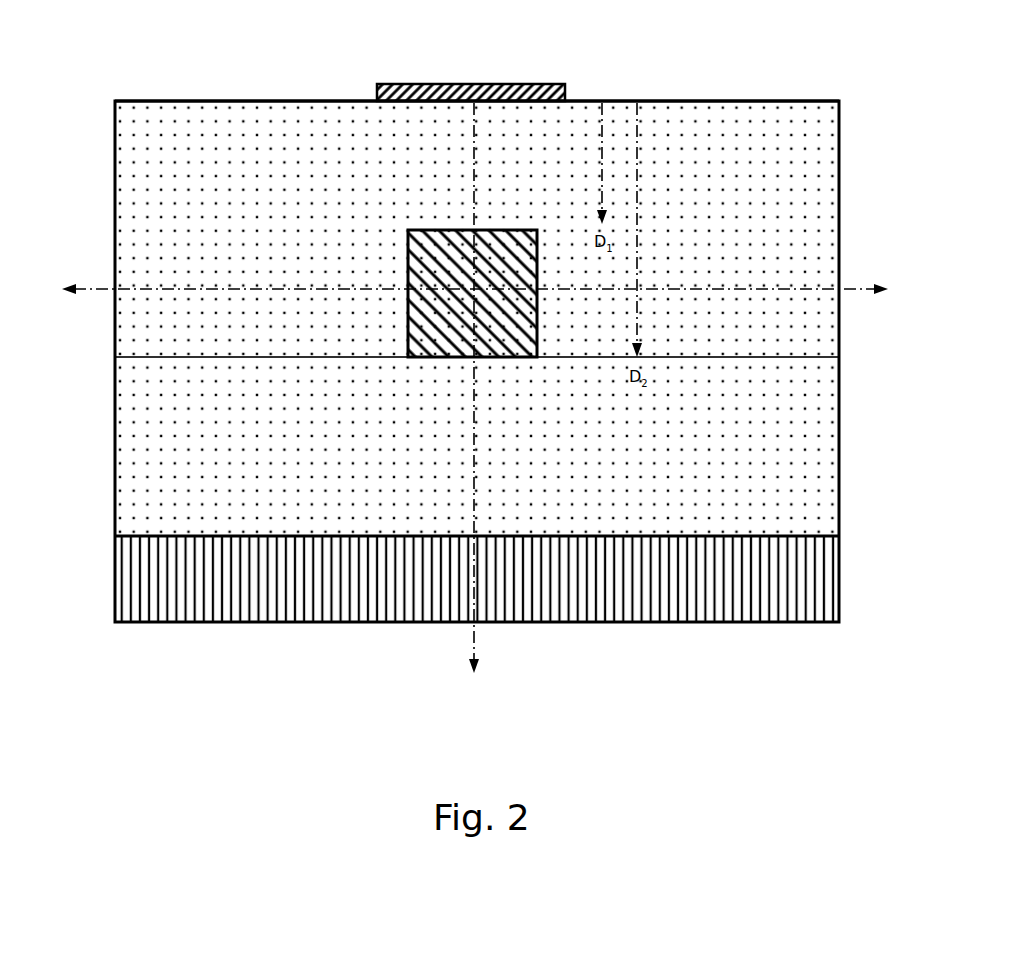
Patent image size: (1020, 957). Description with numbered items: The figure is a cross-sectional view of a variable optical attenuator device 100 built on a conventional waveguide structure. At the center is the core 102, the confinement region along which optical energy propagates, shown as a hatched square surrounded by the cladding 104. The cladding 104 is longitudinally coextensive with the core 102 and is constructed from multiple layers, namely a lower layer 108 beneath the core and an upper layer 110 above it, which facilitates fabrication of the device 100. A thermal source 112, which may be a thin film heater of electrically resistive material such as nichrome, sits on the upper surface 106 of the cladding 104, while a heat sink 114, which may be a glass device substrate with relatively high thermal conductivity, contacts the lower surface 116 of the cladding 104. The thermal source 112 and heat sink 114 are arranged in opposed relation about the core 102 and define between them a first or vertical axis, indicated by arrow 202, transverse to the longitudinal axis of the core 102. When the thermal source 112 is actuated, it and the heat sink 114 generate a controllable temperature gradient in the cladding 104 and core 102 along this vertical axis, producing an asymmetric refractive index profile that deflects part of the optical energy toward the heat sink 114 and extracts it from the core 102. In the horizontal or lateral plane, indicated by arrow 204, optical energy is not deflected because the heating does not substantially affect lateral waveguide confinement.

The variable optical attenuator device 100 is at (256, 621).
The core 102 is at (446, 230).
The cladding 104 is at (152, 447).
The upper surface 106 is at (689, 99).
The lower layer 108 is at (813, 450).
The upper layer 110 is at (810, 237).
The thermal source 112 is at (440, 84).
The heat sink 114 is at (413, 598).
The lower surface 116 is at (753, 538).
The vertical axis arrow 202 is at (477, 640).
The horizontal plane arrow 204 is at (97, 288).